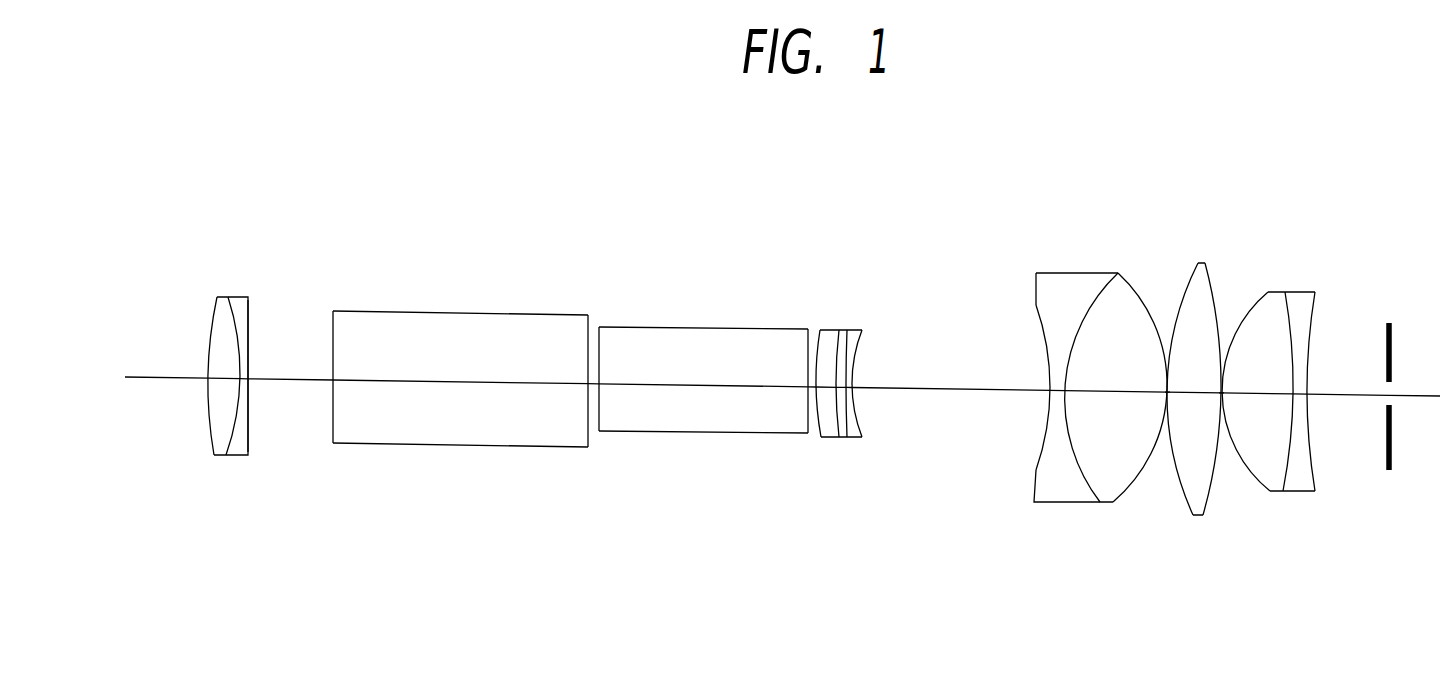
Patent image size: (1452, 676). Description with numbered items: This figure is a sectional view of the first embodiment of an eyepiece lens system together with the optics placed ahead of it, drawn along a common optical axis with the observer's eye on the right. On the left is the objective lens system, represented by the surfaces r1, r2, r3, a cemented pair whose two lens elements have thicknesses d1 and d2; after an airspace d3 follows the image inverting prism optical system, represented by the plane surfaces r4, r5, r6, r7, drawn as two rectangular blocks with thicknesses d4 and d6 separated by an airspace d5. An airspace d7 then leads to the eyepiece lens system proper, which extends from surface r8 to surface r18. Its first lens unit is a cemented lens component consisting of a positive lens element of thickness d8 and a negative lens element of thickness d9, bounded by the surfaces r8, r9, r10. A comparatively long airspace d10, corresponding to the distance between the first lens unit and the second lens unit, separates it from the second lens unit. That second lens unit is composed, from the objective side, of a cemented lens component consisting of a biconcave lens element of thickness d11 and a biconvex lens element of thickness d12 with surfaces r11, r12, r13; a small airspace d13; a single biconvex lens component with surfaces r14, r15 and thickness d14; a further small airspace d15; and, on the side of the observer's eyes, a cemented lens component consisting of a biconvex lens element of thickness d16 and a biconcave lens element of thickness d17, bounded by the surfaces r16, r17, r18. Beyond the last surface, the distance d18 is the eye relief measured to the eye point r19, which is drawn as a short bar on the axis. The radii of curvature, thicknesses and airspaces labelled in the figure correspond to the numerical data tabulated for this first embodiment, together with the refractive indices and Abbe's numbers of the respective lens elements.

The radius of curvature of the first surface r1 is at (210, 318).
The radius of curvature of the second surface r2 is at (235, 316).
The radius of curvature of the third surface r3 is at (250, 320).
The radius of curvature of the fourth surface r4 is at (333, 325).
The radius of curvature of the fifth surface r5 is at (587, 337).
The radius of curvature of the sixth surface r6 is at (600, 347).
The radius of curvature of the seventh surface r7 is at (807, 352).
The radius of curvature of the eighth surface r8 is at (820, 328).
The radius of curvature of the ninth surface r9 is at (848, 330).
The radius of curvature of the tenth surface r10 is at (863, 353).
The radius of curvature of the eleventh surface r11 is at (1036, 322).
The radius of curvature of the twelfth surface r12 is at (1092, 290).
The radius of curvature of the thirteenth surface r13 is at (1126, 292).
The radius of curvature of the fourteenth surface r14 is at (1190, 290).
The radius of curvature of the fifteenth surface r15 is at (1207, 287).
The radius of curvature of the sixteenth surface r16 is at (1262, 292).
The radius of curvature of the seventeenth surface r17 is at (1288, 312).
The radius of curvature of the eighteenth surface r18 is at (1315, 343).
The eye point r19 is at (1393, 350).
The thickness of the first lens element d1 is at (220, 378).
The thickness of the second lens element d2 is at (247, 380).
The airspace between objective lens system and prism d3 is at (300, 381).
The thickness of the first prism d4 is at (457, 382).
The airspace between prisms d5 is at (588, 383).
The thickness of the second prism d6 is at (708, 385).
The airspace between prism and eyepiece lens system d7 is at (810, 387).
The thickness of the positive lens element d8 is at (828, 387).
The thickness of the negative lens element d9 is at (848, 387).
The airspace between first lens unit and second lens unit d10 is at (897, 388).
The thickness of the biconcave lens element d11 is at (1058, 391).
The thickness of the biconvex lens element d12 is at (1107, 397).
The airspace d13 is at (1192, 392).
The thickness of the biconvex lens component d14 is at (1193, 393).
The airspace d15 is at (1220, 397).
The thickness of the biconvex lens element d16 is at (1268, 395).
The thickness of the biconcave lens element d17 is at (1300, 395).
The distance to eye point d18 is at (1347, 393).